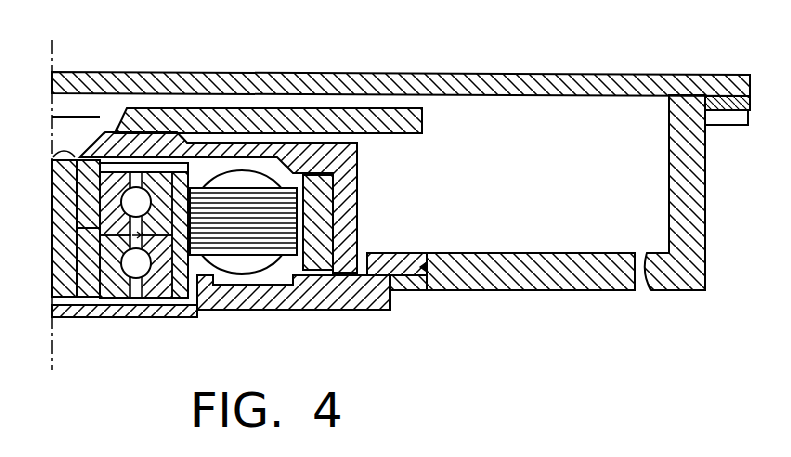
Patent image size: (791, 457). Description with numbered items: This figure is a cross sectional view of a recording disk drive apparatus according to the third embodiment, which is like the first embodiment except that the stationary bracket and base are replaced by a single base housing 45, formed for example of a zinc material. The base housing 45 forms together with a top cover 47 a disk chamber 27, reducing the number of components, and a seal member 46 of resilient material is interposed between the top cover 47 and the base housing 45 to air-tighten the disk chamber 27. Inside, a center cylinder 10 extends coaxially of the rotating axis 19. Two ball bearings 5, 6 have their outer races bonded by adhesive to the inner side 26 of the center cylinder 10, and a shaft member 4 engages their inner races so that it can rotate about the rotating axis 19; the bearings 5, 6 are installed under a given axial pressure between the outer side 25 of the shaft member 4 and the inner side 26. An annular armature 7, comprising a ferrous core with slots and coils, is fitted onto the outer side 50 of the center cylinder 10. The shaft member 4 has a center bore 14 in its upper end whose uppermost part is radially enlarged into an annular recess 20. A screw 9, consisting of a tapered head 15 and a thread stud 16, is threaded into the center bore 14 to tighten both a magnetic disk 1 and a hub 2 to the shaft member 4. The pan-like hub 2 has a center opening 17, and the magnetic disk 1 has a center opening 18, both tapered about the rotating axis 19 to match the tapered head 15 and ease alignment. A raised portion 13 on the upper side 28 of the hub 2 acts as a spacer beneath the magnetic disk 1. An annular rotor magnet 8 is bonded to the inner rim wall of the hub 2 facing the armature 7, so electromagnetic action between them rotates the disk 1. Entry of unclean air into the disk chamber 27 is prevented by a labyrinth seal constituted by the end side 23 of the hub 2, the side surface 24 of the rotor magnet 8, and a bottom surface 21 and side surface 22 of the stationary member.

The magnetic disk 1 is at (285, 110).
The hub 2 is at (353, 166).
The shaft member 4 is at (70, 268).
The ball bearing 5 is at (129, 265).
The ball bearing 6 is at (135, 145).
The armature 7 is at (270, 278).
The rotor magnet 8 is at (303, 182).
The screw 9 is at (70, 117).
The center cylinder 10 is at (205, 314).
The raised portion 13 is at (210, 125).
The center bore 14 is at (73, 218).
The tapered head 15 is at (67, 134).
The thread stud 16 is at (60, 190).
The center opening 17 is at (85, 143).
The center opening 18 is at (118, 130).
The rotating axis 19 is at (55, 352).
The annular recess 20 is at (97, 157).
The bottom surface 21 is at (343, 308).
The side surface 22 is at (390, 291).
The end side 23 is at (347, 273).
The side surface 24 is at (315, 310).
The outer side 25 is at (105, 275).
The inner side 26 is at (160, 169).
The disk chamber 27 is at (458, 168).
The upper side 28 is at (190, 128).
The base housing 45 is at (670, 296).
The seal member 46 is at (738, 112).
The top cover 47 is at (420, 73).
The outer side 50 is at (192, 205).